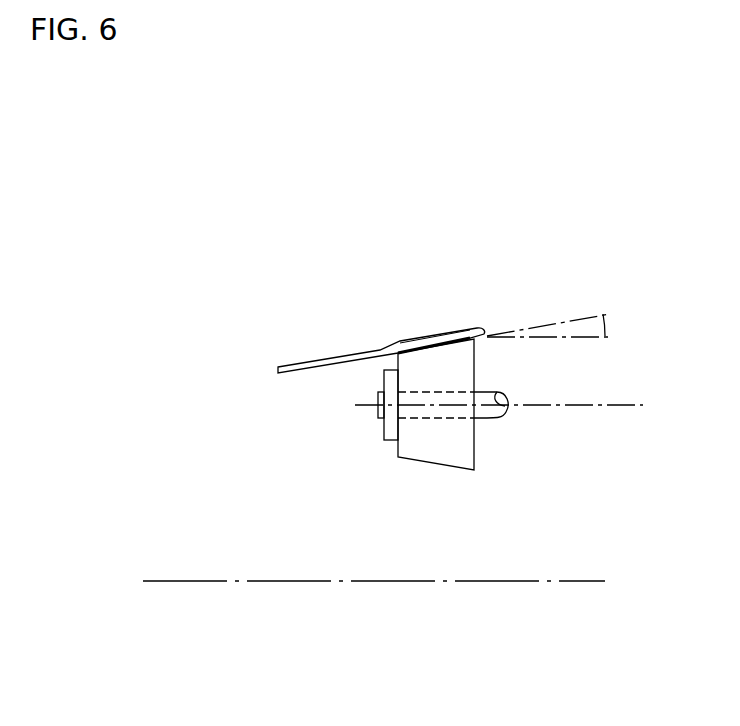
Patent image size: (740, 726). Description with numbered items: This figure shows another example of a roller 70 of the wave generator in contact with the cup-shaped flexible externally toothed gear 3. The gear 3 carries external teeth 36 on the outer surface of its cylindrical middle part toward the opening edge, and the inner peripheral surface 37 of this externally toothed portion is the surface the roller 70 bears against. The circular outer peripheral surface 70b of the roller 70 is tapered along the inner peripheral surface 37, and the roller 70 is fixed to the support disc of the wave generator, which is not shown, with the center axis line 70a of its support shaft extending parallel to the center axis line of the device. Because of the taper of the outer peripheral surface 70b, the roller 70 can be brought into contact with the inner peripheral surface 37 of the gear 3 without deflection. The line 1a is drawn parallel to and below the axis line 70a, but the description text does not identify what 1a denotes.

The flexible externally toothed gear 3 is at (299, 327).
The external teeth 36 is at (446, 325).
The inner peripheral surface of the externally toothed portion 37 is at (490, 347).
The roller 70 is at (494, 449).
The center axis line 70a is at (592, 405).
The circular outer peripheral surface 70b is at (437, 467).
The reference surface line 1a is at (165, 581).